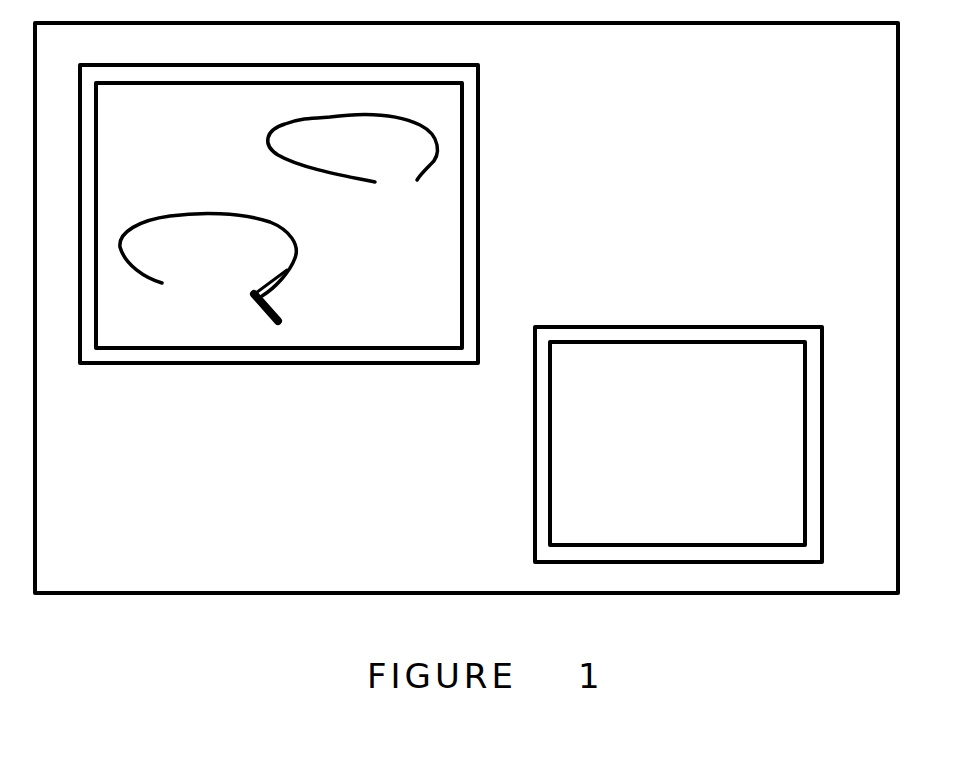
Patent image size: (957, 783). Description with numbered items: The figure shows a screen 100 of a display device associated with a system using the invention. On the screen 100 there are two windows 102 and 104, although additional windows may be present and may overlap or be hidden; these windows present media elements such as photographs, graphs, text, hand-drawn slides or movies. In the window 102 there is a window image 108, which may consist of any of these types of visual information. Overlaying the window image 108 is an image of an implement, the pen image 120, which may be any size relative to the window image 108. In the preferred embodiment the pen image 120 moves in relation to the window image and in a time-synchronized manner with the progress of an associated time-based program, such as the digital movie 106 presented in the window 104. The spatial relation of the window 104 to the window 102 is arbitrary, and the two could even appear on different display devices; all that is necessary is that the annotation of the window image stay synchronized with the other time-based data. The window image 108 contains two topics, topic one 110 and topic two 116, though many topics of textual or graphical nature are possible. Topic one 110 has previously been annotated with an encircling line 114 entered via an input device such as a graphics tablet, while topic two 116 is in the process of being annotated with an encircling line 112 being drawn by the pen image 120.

The screen 100 is at (466, 308).
The window 102 is at (480, 95).
The window 104 is at (777, 327).
The digital movie 106 is at (650, 343).
The window image 108 is at (465, 248).
The topic 1 110 is at (330, 120).
The encircling line 112 is at (215, 213).
The encircling line 114 is at (430, 178).
The topic 2 116 is at (200, 260).
The pen image 120 is at (277, 306).